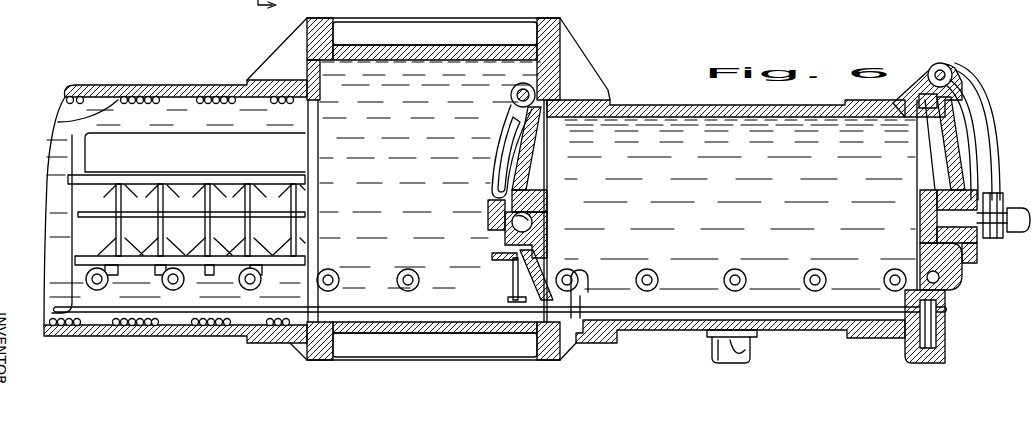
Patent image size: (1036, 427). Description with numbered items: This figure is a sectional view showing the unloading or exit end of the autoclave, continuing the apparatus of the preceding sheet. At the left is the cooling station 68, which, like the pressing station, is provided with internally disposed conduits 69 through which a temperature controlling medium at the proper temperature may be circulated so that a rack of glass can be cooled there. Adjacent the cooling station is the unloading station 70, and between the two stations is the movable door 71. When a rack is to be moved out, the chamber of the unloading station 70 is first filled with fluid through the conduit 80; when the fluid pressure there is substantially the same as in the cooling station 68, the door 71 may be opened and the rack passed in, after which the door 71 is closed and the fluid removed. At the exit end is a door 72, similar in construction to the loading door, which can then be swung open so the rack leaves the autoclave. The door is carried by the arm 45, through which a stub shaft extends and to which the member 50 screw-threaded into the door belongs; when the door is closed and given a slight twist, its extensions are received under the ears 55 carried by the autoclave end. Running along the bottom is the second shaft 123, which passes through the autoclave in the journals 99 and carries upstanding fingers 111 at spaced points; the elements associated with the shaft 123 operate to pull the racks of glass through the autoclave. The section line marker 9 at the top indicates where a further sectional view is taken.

The section line 9- 9 is at (253, 5).
The cooling station 68 is at (119, 86).
The internally disposed conduits 69 is at (58, 120).
The unloading station 70 is at (686, 79).
The movable door 71 is at (512, 146).
The door 72 is at (942, 134).
The ears 55 is at (948, 92).
The arm 45 is at (993, 121).
The member 50 is at (973, 178).
The journals 99 is at (943, 322).
The conduit 80 is at (753, 343).
The second shaft 123 is at (505, 297).
The upstanding fingers 111 is at (580, 292).